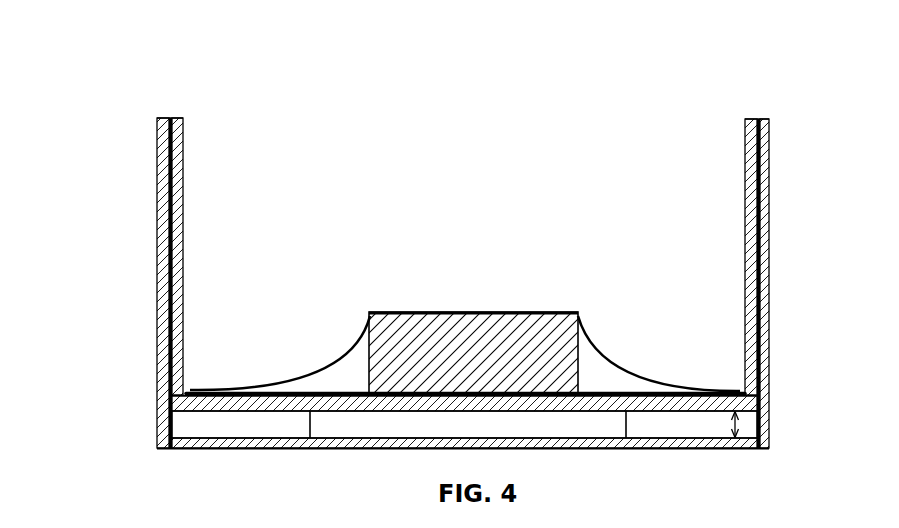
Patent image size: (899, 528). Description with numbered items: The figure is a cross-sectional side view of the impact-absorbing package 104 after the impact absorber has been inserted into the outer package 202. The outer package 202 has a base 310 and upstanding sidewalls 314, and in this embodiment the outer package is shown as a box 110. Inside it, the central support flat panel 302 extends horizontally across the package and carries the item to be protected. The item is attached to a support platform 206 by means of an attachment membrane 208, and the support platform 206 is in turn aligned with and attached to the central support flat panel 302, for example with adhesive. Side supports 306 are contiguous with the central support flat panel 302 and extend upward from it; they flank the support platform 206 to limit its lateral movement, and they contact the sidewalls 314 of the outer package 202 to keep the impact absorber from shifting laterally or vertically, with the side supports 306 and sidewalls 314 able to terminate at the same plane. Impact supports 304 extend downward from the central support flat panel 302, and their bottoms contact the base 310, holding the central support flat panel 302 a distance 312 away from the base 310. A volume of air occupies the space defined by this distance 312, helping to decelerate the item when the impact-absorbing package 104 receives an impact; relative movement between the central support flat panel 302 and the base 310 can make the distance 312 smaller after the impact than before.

The impact-absorbing package 104 is at (112, 76).
The box 110 is at (560, 328).
The outer package 202 is at (768, 166).
The support platform 206 is at (180, 398).
The attachment membrane 208 is at (338, 362).
The central support flat panel 302 is at (757, 405).
The impact supports 304 is at (187, 427).
The side supports 306 is at (750, 270).
The base 310 is at (565, 442).
The distance 312 is at (740, 425).
The sidewalls 314 is at (165, 230).